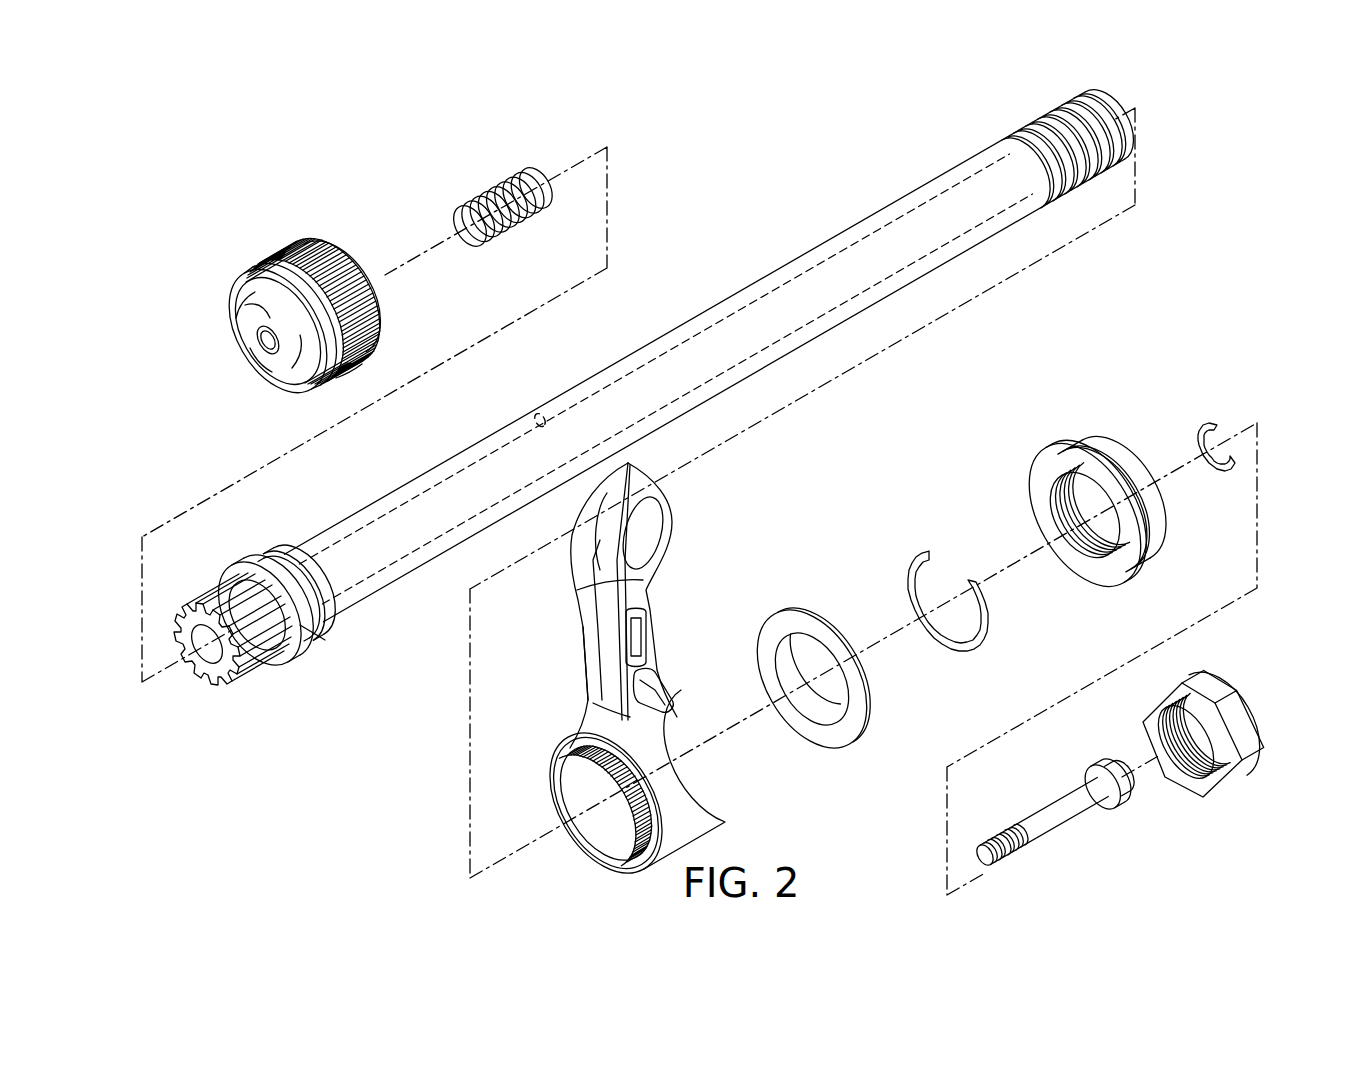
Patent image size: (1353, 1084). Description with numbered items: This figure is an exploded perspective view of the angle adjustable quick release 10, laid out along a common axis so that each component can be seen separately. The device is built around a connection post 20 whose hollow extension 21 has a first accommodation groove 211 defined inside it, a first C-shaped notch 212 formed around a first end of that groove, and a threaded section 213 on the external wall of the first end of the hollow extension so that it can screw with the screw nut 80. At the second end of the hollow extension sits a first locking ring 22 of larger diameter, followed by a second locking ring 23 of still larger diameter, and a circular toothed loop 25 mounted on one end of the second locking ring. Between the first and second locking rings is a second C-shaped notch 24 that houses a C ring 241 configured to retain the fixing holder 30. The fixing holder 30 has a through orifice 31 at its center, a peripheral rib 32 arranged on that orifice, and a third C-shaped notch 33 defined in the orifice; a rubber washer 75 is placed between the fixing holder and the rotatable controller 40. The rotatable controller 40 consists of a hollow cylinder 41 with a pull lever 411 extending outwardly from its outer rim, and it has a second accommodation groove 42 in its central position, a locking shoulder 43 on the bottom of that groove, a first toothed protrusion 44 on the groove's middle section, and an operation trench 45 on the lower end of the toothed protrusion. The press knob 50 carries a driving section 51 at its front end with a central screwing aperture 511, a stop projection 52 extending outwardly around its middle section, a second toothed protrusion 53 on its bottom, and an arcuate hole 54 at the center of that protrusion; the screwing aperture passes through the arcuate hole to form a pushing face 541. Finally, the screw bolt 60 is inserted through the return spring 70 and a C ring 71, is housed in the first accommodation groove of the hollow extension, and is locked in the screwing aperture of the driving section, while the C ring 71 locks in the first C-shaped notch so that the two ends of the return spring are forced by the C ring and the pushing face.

The angle adjustable quick release 10 is at (1290, 150).
The connection post 20 is at (686, 288).
The hollow extension 21 is at (830, 238).
The first accommodation groove 211 is at (540, 414).
The first C-shaped notch 212 is at (315, 666).
The threaded section 213 is at (1030, 115).
The first locking ring 22 is at (300, 553).
The second locking ring 23 is at (247, 566).
The second C-shaped notch 24 is at (290, 566).
The C ring 241 is at (912, 570).
The circular toothed loop 25 is at (240, 690).
The fixing holder 30 is at (1120, 448).
The through orifice 31 is at (1048, 492).
The peripheral rib 32 is at (1112, 578).
The third C-shaped notch 33 is at (1075, 560).
The rotatable controller 40 is at (693, 608).
The hollow cylinder 41 is at (745, 810).
The pull lever 411 is at (585, 605).
The second accommodation groove 42 is at (556, 778).
The locking shoulder 43 is at (595, 845).
The first toothed protrusion 44 is at (563, 745).
The operation trench 45 is at (590, 798).
The press knob 50 is at (248, 238).
The driving section 51 is at (232, 335).
The screwing aperture 511 is at (265, 358).
The stop projection 52 is at (245, 275).
The second toothed protrusion 53 is at (307, 248).
The arcuate hole 54 is at (386, 328).
The pushing face 541 is at (330, 387).
The screw bolt 60 is at (1043, 812).
The return spring 70 is at (490, 180).
The C ring 71 is at (1215, 425).
The rubber washer 75 is at (790, 612).
The screw nut 80 is at (1228, 800).